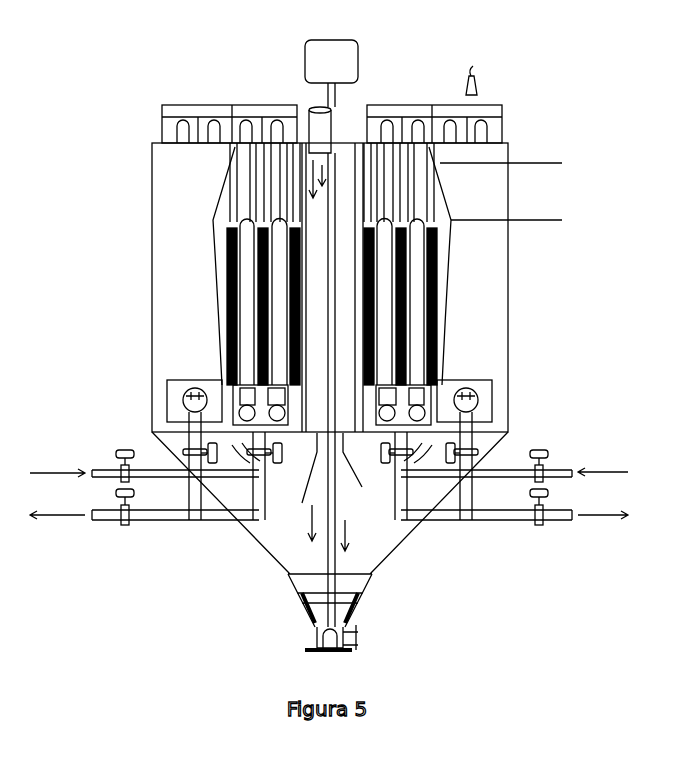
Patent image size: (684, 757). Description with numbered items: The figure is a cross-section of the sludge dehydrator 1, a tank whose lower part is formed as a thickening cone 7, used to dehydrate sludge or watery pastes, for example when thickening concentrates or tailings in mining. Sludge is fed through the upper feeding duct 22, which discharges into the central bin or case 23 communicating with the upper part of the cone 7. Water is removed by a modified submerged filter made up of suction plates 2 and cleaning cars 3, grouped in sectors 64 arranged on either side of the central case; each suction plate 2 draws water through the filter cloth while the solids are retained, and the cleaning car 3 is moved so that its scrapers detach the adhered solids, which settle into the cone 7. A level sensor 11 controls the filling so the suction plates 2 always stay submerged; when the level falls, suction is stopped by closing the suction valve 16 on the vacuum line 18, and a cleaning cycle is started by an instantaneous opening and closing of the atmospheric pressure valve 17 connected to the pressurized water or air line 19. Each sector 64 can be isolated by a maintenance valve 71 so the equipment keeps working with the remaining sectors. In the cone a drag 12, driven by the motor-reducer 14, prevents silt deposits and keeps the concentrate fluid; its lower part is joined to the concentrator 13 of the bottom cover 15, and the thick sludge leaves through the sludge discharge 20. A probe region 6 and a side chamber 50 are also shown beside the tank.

The sludge dehydrator 1 is at (152, 222).
The suction plate 2 is at (243, 232).
The cleaning car 3 is at (173, 112).
The flame 6 is at (473, 67).
The thickening cone 7 is at (397, 537).
The level sensor 11 is at (476, 82).
The drag 12 is at (302, 600).
The concentrator 13 is at (325, 650).
The motor-reducer 14 is at (348, 60).
The bottom cover 15 is at (345, 650).
The suction valve 16 is at (125, 527).
The atmospheric pressure valve 17 is at (125, 450).
The vacuum line 18 is at (172, 513).
The pressurized water or air line 19 is at (150, 470).
The sludge discharge 20 is at (358, 635).
The upper feeding duct 22 is at (311, 107).
The central bin or case 23 is at (343, 133).
The side chamber 50 is at (508, 311).
The sector 64 is at (198, 103).
The maintenance valve 71 is at (277, 463).